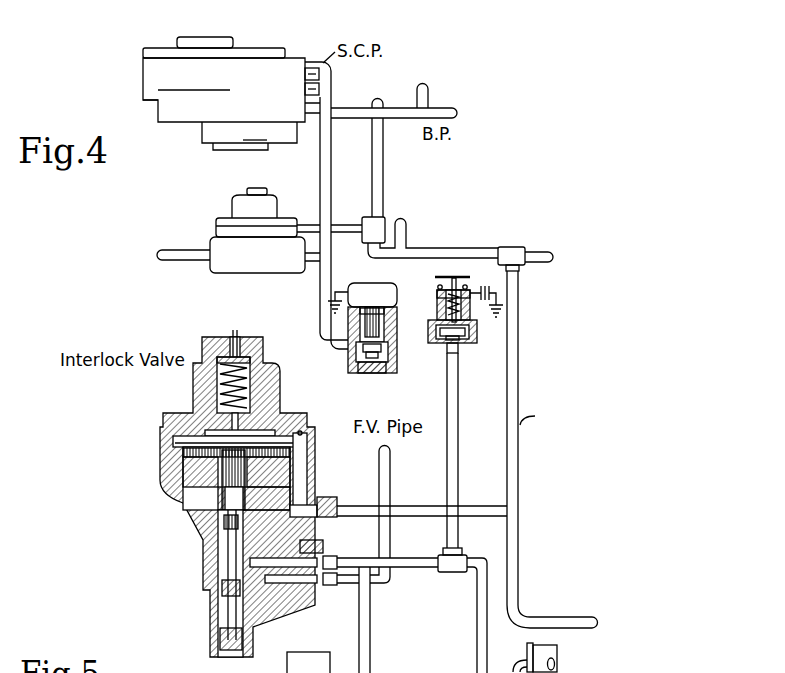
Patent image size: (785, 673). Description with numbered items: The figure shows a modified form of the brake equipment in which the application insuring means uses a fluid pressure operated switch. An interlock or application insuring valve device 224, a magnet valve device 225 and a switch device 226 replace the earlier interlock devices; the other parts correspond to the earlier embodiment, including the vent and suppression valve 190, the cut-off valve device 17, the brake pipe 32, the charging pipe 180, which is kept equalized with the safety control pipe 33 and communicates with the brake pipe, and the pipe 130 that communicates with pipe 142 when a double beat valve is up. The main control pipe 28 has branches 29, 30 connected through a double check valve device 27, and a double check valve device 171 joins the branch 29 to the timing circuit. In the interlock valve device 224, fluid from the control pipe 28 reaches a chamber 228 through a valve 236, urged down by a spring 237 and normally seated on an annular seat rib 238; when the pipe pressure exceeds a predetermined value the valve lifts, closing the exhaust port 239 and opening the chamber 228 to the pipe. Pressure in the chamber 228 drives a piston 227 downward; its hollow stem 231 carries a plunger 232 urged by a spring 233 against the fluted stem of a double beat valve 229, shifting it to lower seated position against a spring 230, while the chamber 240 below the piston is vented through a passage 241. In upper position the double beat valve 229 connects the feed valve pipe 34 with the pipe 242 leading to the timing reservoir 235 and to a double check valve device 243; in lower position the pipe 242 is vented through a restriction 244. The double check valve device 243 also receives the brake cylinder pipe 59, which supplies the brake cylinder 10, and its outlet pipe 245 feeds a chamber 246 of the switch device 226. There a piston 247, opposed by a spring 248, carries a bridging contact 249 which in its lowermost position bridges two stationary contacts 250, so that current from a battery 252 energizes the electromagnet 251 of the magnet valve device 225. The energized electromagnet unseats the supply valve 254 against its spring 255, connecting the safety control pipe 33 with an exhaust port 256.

The vent and supply valve 190 is at (257, 41).
The charging pipe 180 is at (318, 78).
The pipe 130 is at (312, 92).
The safety control pipe 33 is at (331, 178).
The brake pipe 32 is at (452, 111).
The pipe 142 is at (367, 104).
The cut-off valve device 17 is at (287, 206).
The double check valve device 171 is at (378, 222).
The branch 29 is at (435, 253).
The double check valve device 27 is at (513, 251).
The branch 30 is at (538, 253).
The main control pipe 28 is at (513, 552).
The electromagnet 251 is at (365, 290).
The exhaust port 256 is at (395, 318).
The supply valve 254 is at (392, 343).
The spring 255 is at (356, 367).
The magnet valve device 225 is at (402, 367).
The spring 248 is at (467, 307).
The piston 247 is at (470, 325).
The bridging contact 249 is at (462, 268).
The stationary contacts 250 is at (440, 287).
The battery 252 is at (493, 290).
The switch device 226 is at (486, 337).
The chamber 246 is at (465, 351).
The pipe 245 is at (453, 463).
The double check valve device 243 is at (447, 571).
The pipe 242 is at (410, 563).
The brake cylinder pipe 59 is at (478, 644).
The feed valve pipe 34 is at (392, 492).
The interlock valve device 224 is at (150, 440).
The exhaust port 239 is at (237, 338).
The valve 236 is at (218, 381).
The spring 237 is at (252, 363).
The annular seat rib 238 is at (253, 418).
The piston 227 is at (183, 467).
The spring 233 is at (215, 505).
The hollow stem 231 is at (217, 507).
The chamber 240 is at (307, 477).
The chamber 228 is at (300, 434).
The plunger 232 is at (227, 532).
The double beat valve 229 is at (225, 588).
The spring 230 is at (220, 636).
The passage 241 is at (337, 535).
The restriction 244 is at (337, 542).
The timing reservoir 235 is at (327, 634).
The brake cylinder 10 is at (549, 648).